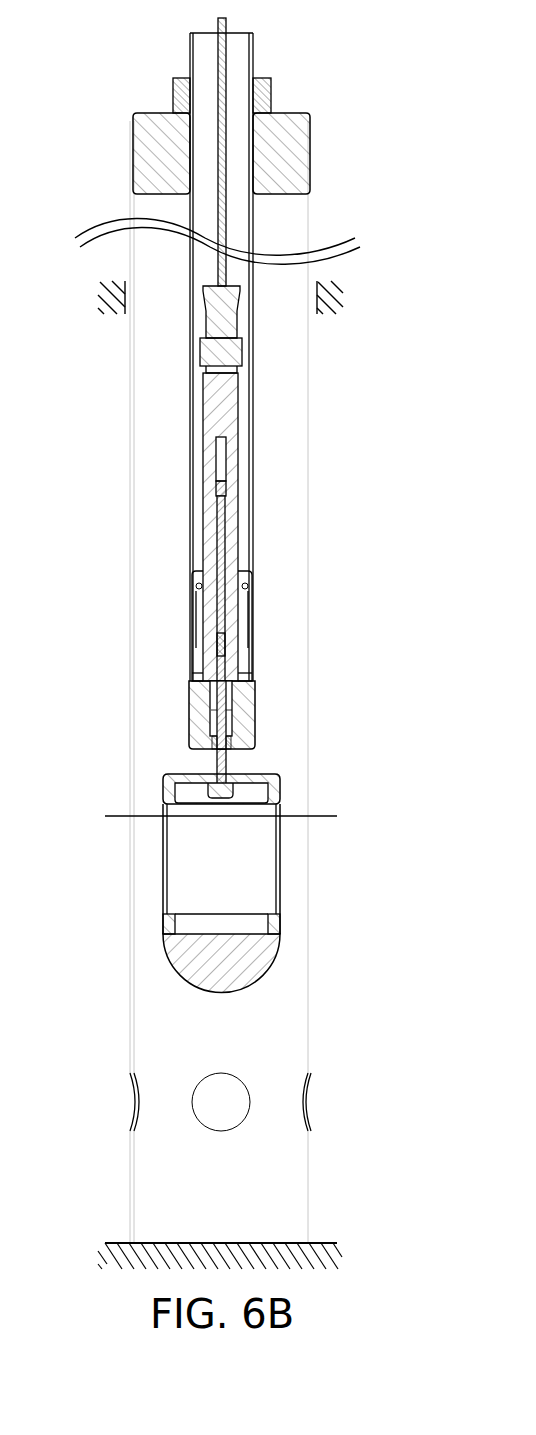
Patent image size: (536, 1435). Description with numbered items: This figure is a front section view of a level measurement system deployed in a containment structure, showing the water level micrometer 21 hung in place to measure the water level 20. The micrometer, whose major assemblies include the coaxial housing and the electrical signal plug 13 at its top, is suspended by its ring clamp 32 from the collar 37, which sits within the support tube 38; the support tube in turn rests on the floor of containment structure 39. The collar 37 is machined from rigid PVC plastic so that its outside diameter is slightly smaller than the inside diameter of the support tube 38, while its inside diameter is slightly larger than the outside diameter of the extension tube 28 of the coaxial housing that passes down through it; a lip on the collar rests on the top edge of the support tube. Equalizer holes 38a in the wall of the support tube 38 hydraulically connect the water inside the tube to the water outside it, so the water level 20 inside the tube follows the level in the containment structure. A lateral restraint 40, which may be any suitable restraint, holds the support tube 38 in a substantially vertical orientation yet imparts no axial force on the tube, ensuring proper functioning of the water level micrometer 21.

The electrical signal plug 13 is at (218, 24).
The extension tube 28 is at (190, 58).
The ring clamp 32 is at (174, 96).
The collar 37 is at (134, 116).
The lateral restraint 40 is at (100, 302).
The support tube 38 is at (131, 432).
The equalizer holes 38a is at (136, 1100).
The floor of containment structure 39 is at (117, 1242).
The water level micrometer 21 is at (161, 608).
The water level 20 is at (118, 815).